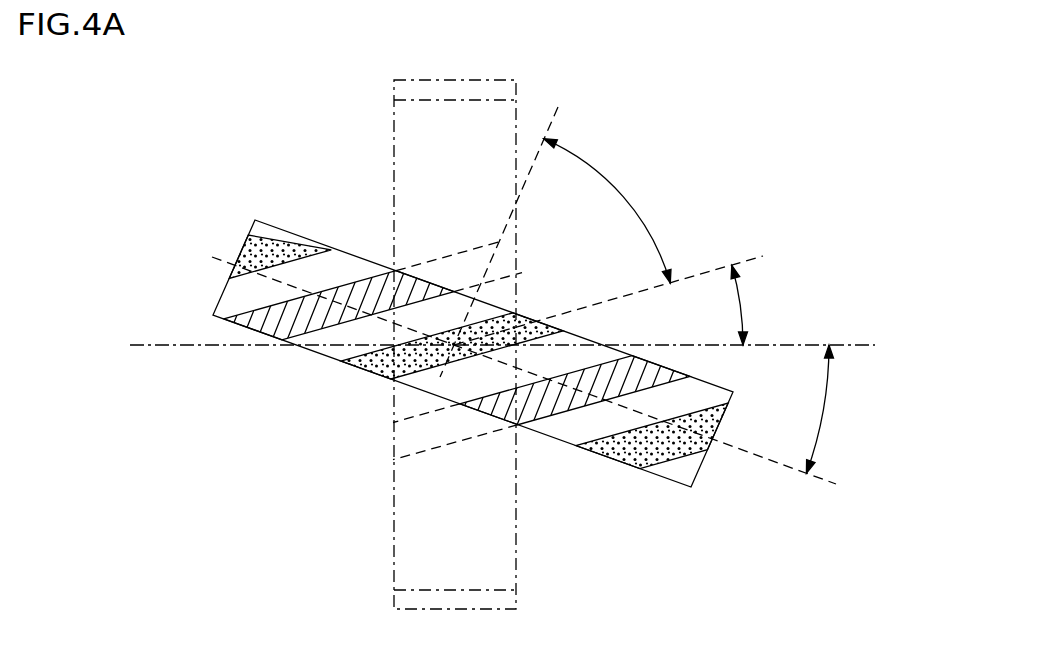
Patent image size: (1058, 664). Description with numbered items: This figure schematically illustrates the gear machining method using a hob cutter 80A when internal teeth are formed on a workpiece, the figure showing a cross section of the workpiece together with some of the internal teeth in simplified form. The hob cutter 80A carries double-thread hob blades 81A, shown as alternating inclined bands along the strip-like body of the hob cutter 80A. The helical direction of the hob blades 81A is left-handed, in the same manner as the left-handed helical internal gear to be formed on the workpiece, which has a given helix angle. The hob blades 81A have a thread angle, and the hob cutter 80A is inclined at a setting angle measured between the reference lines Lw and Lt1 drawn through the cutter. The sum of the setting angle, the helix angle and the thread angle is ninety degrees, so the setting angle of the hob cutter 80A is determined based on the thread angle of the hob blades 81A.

The hob cutter 80A is at (416, 314).
The double-thread hob blades 81A is at (395, 345).
The width direction axis Lw is at (529, 301).
The longitudinal axis of strip Lt1 is at (524, 418).